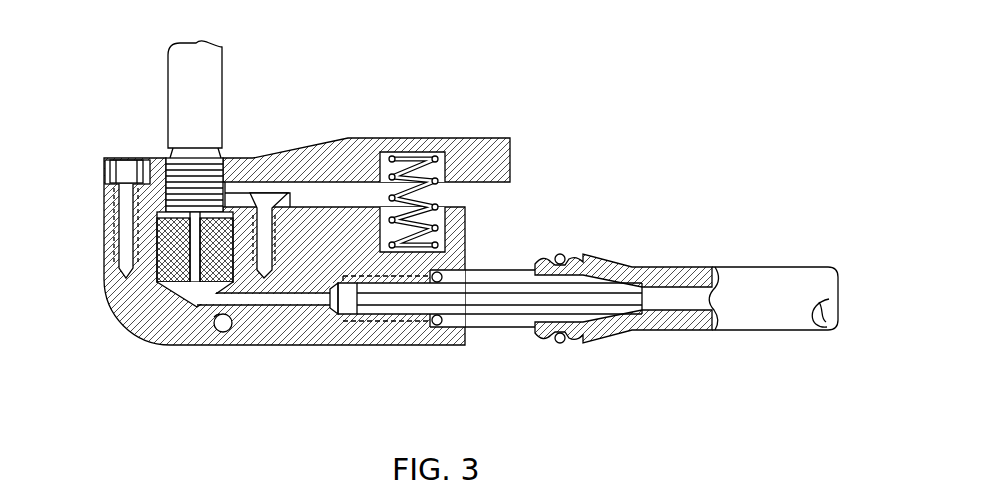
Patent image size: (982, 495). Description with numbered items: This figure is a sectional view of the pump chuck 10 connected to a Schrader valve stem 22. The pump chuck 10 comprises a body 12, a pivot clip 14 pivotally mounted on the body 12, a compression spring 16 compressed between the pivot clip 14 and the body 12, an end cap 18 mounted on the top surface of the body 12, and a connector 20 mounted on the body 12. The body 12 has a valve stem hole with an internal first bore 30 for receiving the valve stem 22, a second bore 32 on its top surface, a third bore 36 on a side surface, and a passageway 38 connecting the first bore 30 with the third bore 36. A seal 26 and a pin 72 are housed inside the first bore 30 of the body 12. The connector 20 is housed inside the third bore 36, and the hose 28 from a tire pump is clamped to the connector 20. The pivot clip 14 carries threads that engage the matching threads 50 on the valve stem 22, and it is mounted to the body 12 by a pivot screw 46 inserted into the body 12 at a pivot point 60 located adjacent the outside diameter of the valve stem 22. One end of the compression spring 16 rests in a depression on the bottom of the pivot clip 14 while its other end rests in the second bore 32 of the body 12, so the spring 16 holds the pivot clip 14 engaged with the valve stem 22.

The pump chuck 10 is at (419, 78).
The body 12 is at (325, 235).
The pivot clip 14 is at (497, 138).
The compression spring 16 is at (443, 197).
The end cap 18 is at (121, 185).
The connector 20 is at (497, 318).
The valve stem 22 is at (212, 98).
The seal 26 is at (142, 214).
The hose 28 is at (658, 272).
The first bore 30 is at (196, 298).
The second bore 32 is at (437, 218).
The third bore 36 is at (345, 303).
The passageway 38 is at (272, 300).
The pivot screw 46 is at (222, 323).
The matching threads 50 is at (177, 175).
The pivot point 60 is at (214, 315).
The pin 72 is at (170, 287).